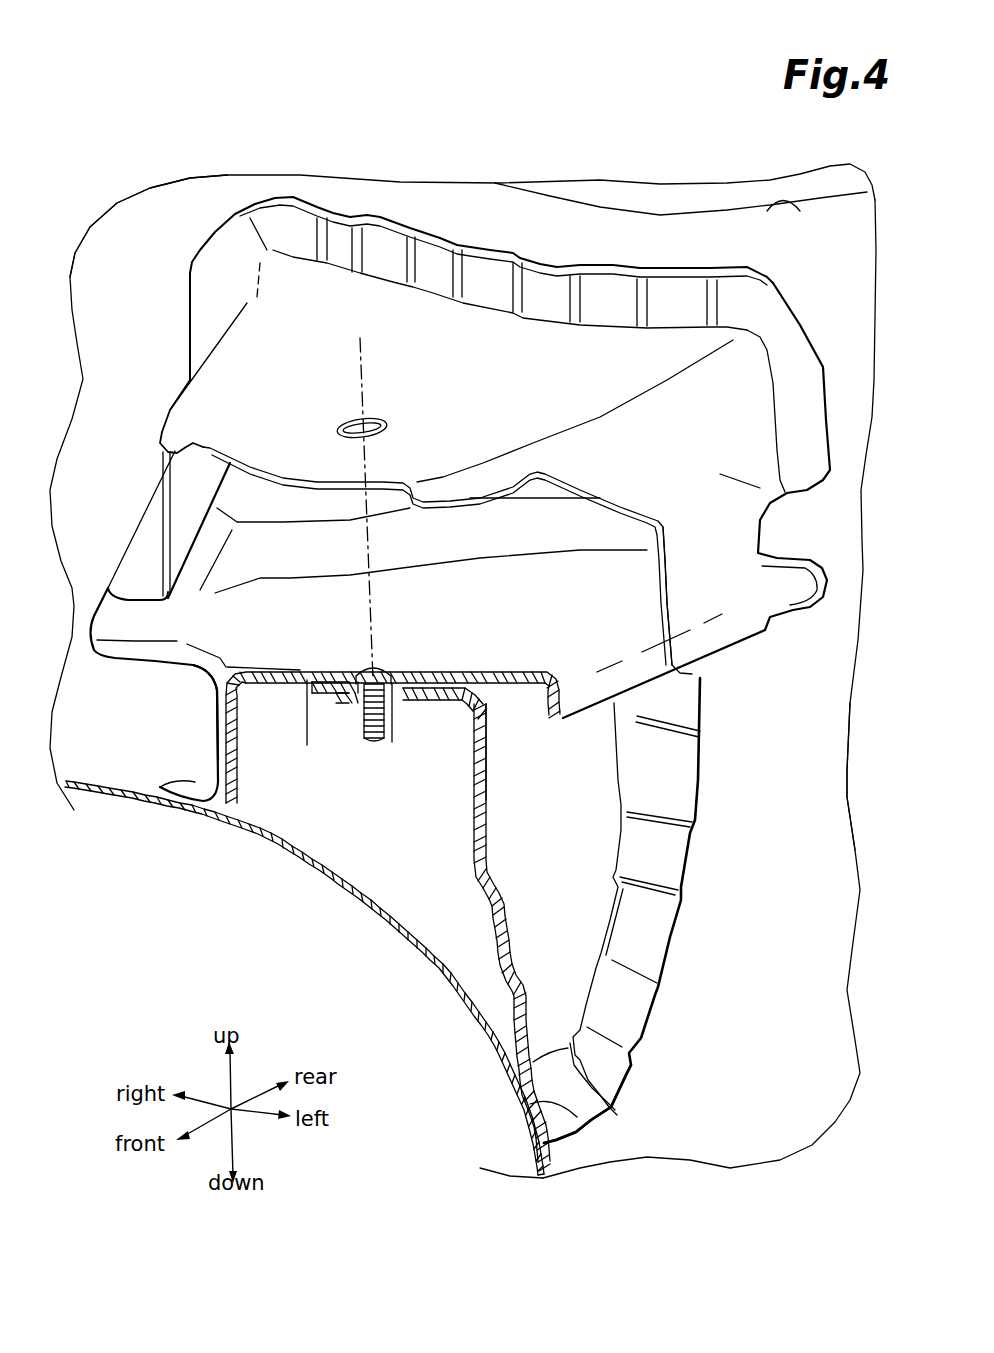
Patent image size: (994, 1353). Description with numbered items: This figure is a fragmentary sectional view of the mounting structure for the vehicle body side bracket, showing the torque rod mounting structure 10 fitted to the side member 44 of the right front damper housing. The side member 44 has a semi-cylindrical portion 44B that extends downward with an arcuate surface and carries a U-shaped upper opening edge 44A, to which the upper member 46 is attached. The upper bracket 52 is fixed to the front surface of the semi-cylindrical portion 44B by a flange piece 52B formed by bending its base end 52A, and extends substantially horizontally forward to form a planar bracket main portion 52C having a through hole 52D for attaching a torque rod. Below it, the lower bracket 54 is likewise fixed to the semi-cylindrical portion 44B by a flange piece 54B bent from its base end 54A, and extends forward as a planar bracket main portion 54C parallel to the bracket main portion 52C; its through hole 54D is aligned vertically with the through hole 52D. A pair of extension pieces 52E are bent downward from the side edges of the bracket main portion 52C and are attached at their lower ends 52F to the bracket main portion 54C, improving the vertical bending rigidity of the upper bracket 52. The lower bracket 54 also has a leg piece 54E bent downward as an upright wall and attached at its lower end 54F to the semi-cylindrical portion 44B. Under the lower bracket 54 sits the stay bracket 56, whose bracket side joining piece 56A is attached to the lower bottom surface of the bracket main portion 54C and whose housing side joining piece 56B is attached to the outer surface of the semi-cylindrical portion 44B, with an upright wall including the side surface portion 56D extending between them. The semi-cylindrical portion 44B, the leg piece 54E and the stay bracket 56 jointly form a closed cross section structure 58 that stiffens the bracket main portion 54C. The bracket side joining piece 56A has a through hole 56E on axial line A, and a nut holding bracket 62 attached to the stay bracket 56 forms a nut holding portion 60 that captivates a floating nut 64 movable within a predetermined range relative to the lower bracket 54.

The torque rod mounting structure 10 is at (172, 317).
The side member 44 is at (806, 752).
The upper opening edge 44A is at (800, 213).
The semi-cylindrical portion 44B is at (813, 817).
The upper member 46 is at (662, 183).
The upper bracket 52 is at (285, 275).
The base end 52A is at (435, 293).
The flange piece 52B is at (487, 267).
The bracket main portion 52C is at (337, 283).
The through hole 52D is at (378, 420).
The extension pieces 52E is at (153, 497).
The lower end 52F is at (727, 640).
The lower bracket 54 is at (90, 602).
The base end 54A is at (293, 577).
The flange piece 54B is at (473, 527).
The bracket main portion 54C is at (588, 597).
The through hole 54D is at (390, 670).
The leg piece 54E is at (217, 717).
The lower end 54F is at (190, 795).
The stay bracket 56 is at (597, 865).
The bracket side joining piece 56A is at (437, 670).
The housing side joining piece 56B is at (590, 1120).
The side surface portion 56D is at (507, 923).
The through hole 56E is at (350, 715).
The closed cross section structure 58 is at (409, 851).
The nut holding portion 60 is at (420, 707).
The nut holding bracket 62 is at (450, 730).
The floating nut 64 is at (390, 740).